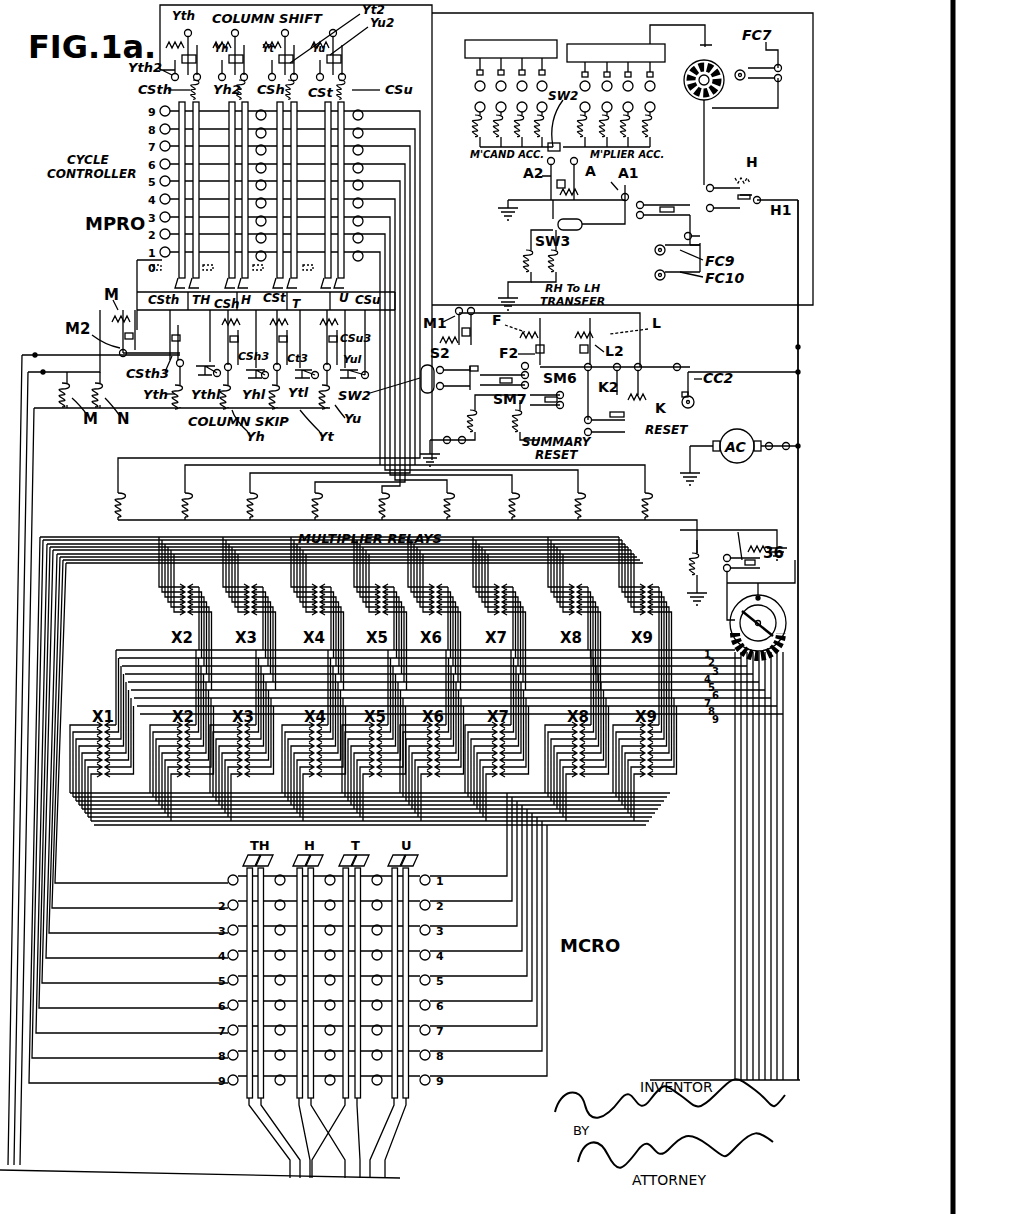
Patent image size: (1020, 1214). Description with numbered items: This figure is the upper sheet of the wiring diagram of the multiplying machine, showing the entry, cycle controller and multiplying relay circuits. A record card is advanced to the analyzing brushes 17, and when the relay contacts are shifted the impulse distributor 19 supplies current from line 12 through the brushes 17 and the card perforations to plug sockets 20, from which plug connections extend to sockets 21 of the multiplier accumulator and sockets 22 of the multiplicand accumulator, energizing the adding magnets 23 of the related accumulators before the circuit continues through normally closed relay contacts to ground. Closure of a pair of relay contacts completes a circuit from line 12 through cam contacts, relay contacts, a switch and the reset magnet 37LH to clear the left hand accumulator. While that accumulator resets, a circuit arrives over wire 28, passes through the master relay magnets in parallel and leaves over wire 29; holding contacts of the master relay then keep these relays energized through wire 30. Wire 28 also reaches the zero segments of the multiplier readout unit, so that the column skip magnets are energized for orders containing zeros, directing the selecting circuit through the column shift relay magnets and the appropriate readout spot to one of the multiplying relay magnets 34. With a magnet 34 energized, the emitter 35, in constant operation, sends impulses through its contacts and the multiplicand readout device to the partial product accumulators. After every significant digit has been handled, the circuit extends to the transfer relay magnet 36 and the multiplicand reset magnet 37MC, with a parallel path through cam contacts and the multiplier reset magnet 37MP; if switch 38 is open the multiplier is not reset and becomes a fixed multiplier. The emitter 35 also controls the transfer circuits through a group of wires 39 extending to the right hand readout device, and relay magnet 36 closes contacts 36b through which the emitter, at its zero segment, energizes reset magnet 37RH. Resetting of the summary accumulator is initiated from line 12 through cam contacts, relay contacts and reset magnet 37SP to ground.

The line 12 is at (798, 347).
The analyzing brushes 17 is at (596, 46).
The impulse distributor 19 is at (716, 93).
The plug sockets 20 is at (475, 88).
The sockets of the multiplier accumulator 21 is at (655, 108).
The sockets of the multiplicand accumulator 22 is at (475, 108).
The adding magnets 23 is at (498, 132).
The wire 28 is at (16, 1138).
The wire 29 is at (34, 462).
The wire 30 is at (35, 353).
The multiplying relay magnets 34 is at (330, 482).
The emitter 35 is at (730, 630).
The RH to LH transfer relay magnet 36 is at (562, 268).
The contacts 36b is at (733, 536).
The multiplicand reset magnet 37MC is at (526, 258).
The multiplier reset magnet 37MP is at (700, 236).
The LH reset magnet 37LH is at (470, 414).
The SP reset magnet 37SP is at (516, 432).
The RH reset magnet 37RH is at (692, 562).
The switch 38 is at (640, 217).
The group of wires 39 is at (762, 903).